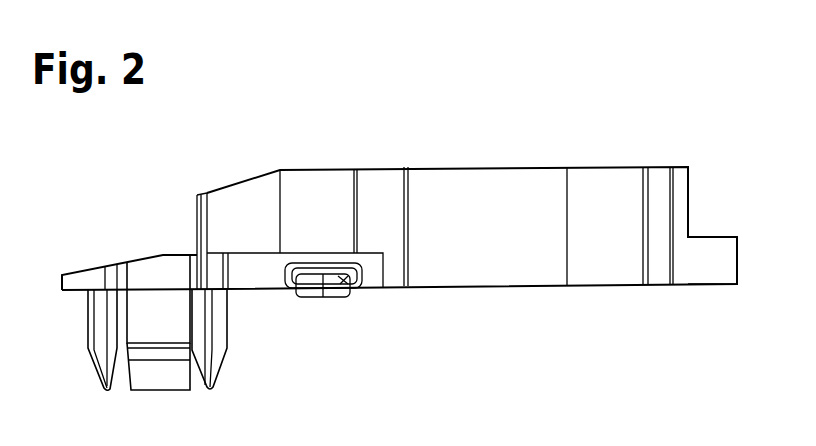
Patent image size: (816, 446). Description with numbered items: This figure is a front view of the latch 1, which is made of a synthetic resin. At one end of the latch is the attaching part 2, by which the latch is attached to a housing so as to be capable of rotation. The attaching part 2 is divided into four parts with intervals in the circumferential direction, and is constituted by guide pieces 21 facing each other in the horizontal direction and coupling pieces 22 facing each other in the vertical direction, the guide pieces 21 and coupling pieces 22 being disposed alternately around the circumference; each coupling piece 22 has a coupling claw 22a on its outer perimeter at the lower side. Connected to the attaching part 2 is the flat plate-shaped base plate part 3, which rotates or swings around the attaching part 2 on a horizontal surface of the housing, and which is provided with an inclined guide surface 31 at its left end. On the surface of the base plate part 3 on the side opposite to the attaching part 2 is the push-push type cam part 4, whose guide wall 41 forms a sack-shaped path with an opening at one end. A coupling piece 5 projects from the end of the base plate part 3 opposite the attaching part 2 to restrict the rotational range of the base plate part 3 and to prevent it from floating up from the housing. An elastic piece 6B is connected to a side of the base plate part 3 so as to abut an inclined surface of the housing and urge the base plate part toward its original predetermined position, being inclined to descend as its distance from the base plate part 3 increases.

The latch 1 is at (688, 161).
The attaching part 2 is at (117, 397).
The base plate part 3 is at (175, 252).
The cam part 4 is at (601, 165).
The coupling piece 5 is at (722, 250).
The elastic piece 6B is at (350, 287).
The guide piece 21 is at (107, 325).
The coupling piece 22 is at (153, 303).
The coupling claw 22a is at (165, 357).
The guide surface 31 is at (112, 285).
The guide wall 41 is at (476, 202).